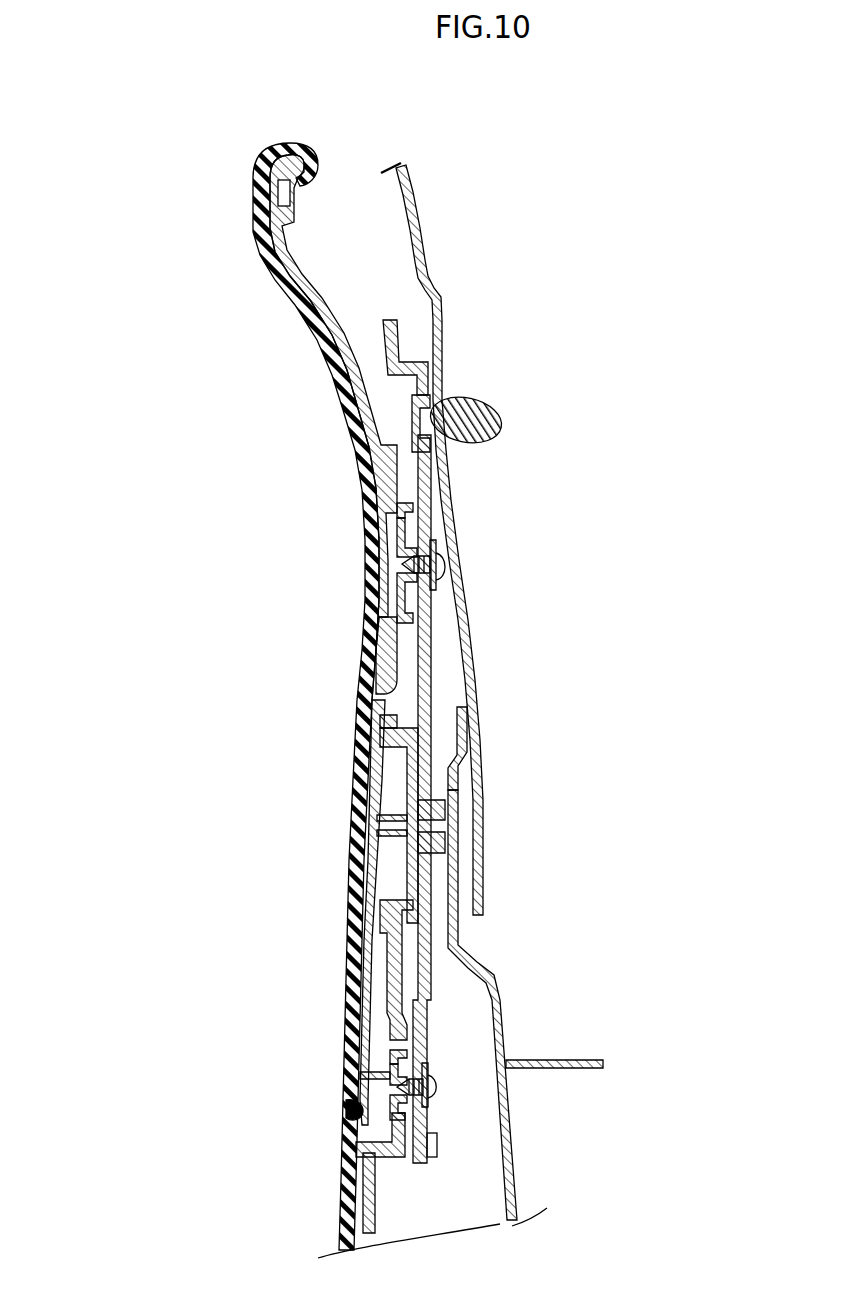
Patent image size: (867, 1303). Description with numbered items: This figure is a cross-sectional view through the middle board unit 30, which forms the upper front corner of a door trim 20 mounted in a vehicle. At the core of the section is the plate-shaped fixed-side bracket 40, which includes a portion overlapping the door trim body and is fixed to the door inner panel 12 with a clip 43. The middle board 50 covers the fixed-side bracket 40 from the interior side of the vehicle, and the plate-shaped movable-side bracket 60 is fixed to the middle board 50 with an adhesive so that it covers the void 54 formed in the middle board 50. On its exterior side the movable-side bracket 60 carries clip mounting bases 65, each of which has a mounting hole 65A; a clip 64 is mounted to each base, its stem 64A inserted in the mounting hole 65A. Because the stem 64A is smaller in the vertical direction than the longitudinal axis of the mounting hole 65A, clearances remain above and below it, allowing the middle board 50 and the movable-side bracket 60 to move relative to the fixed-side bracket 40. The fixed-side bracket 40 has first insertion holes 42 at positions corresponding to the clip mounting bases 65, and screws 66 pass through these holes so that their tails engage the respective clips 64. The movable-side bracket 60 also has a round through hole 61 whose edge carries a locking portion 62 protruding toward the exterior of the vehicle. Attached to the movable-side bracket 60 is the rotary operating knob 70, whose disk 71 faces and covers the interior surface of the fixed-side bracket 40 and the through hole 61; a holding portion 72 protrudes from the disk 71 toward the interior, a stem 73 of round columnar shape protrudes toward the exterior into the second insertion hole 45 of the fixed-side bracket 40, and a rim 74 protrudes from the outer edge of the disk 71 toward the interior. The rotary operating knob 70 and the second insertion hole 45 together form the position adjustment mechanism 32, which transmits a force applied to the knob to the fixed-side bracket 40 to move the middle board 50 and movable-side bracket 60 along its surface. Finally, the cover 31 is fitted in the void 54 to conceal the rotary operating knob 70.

The middle board unit 30 is at (230, 199).
The middle board 50 is at (333, 337).
The movable-side bracket 60 is at (373, 647).
The cover 31 is at (348, 1005).
The void 54 is at (340, 1127).
The door inner panel 12 is at (437, 297).
The clip 43 is at (475, 397).
The fixed-side bracket 40 is at (431, 684).
The locking portion 62 is at (422, 758).
The door trim 20 is at (513, 1170).
The rim 74 is at (378, 703).
The holding portion 72 is at (390, 834).
The rotary operating knob 70 is at (390, 778).
The disk 71 is at (410, 806).
The stem 73 is at (453, 813).
The second insertion hole 45 is at (440, 833).
The position adjustment mechanism 32 is at (377, 882).
The through hole 61 is at (396, 859).
The mounting hole 65A is at (402, 537).
The clip 64 is at (400, 557).
The stem 64A is at (400, 567).
The clip mounting base 65 is at (413, 510).
The first insertion hole 42 is at (437, 560).
The screw 66 is at (442, 572).